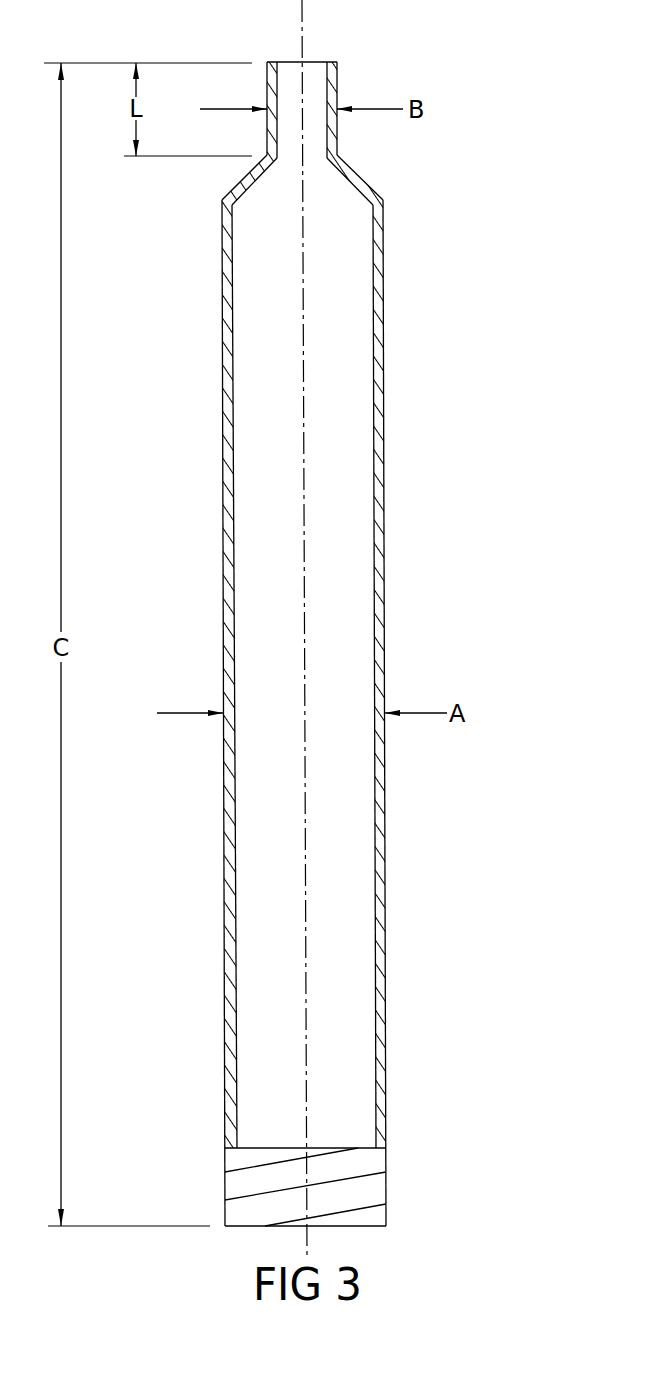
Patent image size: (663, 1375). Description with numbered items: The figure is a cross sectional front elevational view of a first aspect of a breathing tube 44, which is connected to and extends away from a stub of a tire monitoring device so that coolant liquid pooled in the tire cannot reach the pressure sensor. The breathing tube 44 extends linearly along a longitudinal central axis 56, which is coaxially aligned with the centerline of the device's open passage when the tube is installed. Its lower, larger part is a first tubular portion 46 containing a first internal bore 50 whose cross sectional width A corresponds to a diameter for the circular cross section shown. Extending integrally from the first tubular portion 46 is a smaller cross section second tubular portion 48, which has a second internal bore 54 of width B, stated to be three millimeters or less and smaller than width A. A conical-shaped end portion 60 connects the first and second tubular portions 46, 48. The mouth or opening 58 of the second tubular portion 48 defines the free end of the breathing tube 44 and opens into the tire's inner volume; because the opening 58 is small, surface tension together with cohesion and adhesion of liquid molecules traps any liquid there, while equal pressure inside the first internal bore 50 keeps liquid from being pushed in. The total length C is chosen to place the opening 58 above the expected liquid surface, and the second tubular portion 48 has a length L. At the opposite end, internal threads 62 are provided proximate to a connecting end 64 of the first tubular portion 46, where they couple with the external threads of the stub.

The breathing tube 44 is at (482, 234).
The first tubular portion 46 is at (380, 572).
The second tubular portion 48 is at (340, 90).
The first internal bore 50 is at (353, 932).
The second internal bore 54 is at (288, 128).
The longitudinal central axis 56 is at (309, 43).
The opening 58 is at (290, 62).
The end portion 60 is at (355, 174).
The internal threads 62 is at (343, 1178).
The connecting end 64 is at (225, 1185).